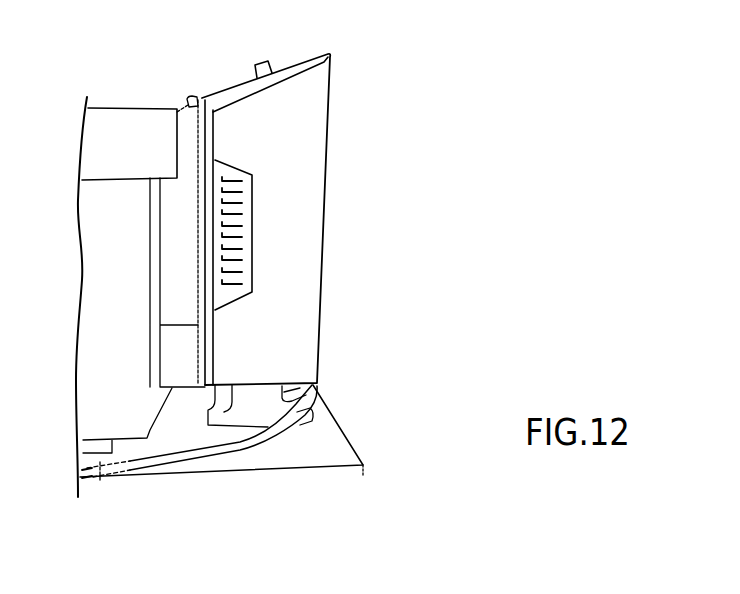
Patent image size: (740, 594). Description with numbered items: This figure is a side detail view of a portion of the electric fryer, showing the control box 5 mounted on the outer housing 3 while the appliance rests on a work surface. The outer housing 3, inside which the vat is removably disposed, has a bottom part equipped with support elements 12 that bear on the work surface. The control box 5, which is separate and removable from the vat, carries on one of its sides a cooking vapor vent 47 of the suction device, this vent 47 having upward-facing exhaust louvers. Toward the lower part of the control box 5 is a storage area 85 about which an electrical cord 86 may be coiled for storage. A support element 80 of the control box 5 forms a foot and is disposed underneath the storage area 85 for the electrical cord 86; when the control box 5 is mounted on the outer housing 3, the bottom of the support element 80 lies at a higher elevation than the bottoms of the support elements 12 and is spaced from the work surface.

The outer housing 3 is at (115, 328).
The control box 5 is at (292, 257).
The cooking vapor vent 47 is at (235, 212).
The storage area 85 is at (300, 392).
The electrical cord 86 is at (207, 453).
The support element 80 is at (305, 425).
The support elements 12 is at (100, 482).